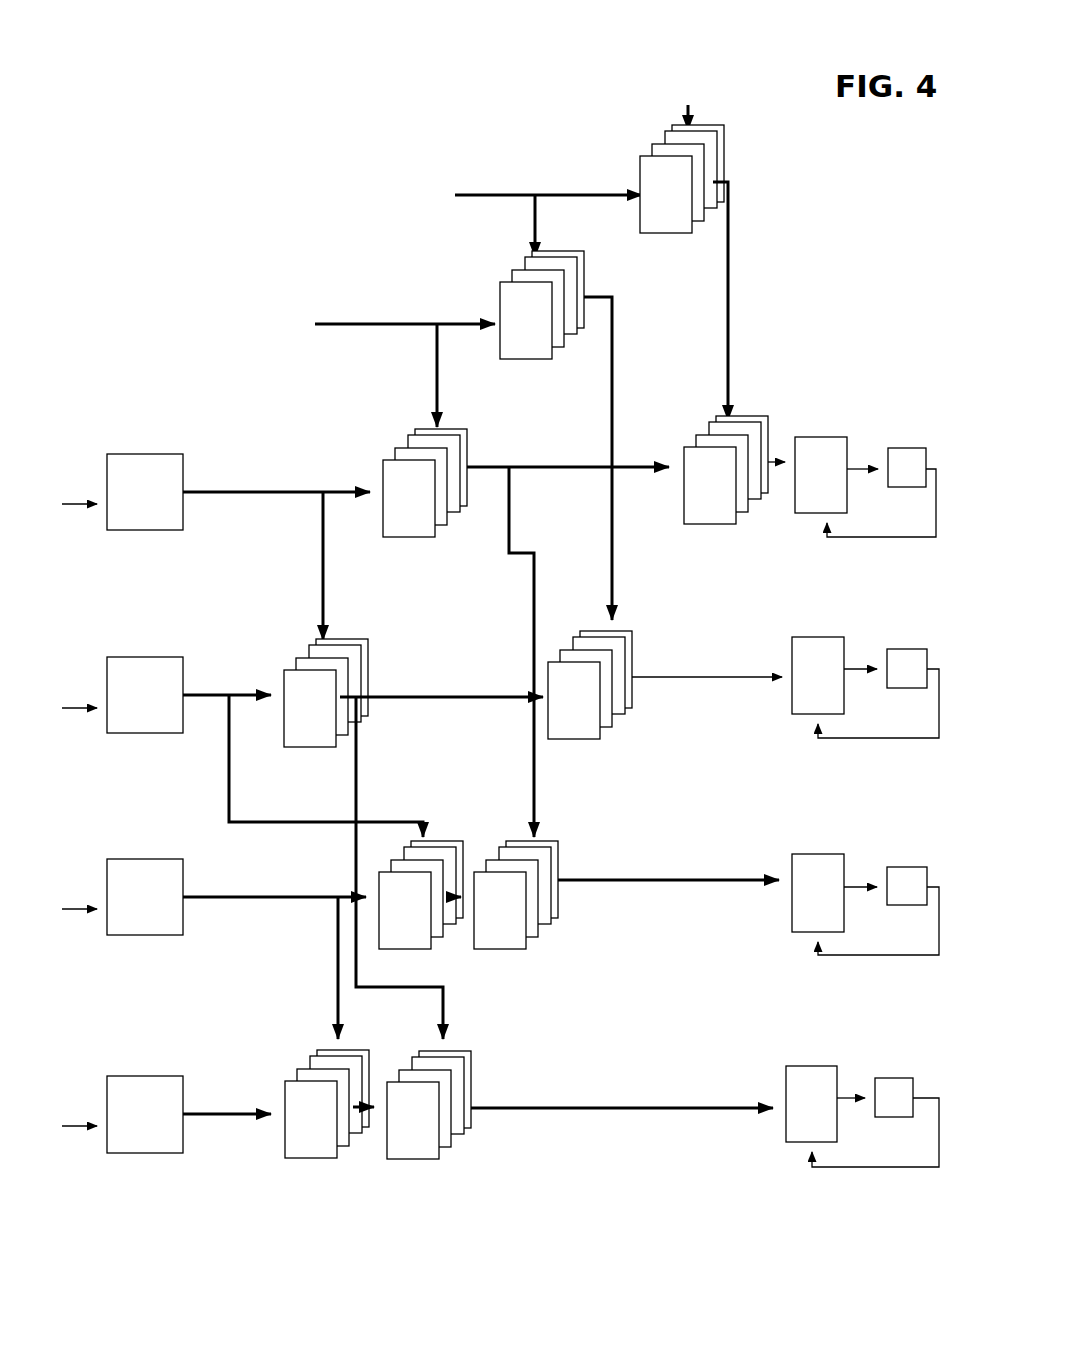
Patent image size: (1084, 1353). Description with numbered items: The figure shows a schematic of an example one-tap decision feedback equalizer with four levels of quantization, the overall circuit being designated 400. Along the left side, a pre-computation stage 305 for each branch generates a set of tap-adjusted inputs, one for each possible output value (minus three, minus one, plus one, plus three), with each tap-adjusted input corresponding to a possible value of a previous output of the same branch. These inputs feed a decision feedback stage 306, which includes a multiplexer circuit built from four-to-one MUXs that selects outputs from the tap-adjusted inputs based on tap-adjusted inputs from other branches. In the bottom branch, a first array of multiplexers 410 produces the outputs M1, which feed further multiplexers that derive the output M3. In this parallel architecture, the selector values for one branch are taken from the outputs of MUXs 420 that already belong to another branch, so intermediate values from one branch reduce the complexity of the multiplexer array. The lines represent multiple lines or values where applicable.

The multiplexer circuit 400 is at (232, 146).
The pre-computation stage 305 is at (103, 1177).
The decision feedback stage 306 is at (762, 1177).
The first array of multiplexers 410 is at (281, 1050).
The MUXs 420 is at (290, 636).
The outputs of the first array of multiplexers M1 is at (376, 1128).
The output M3 is at (516, 1120).